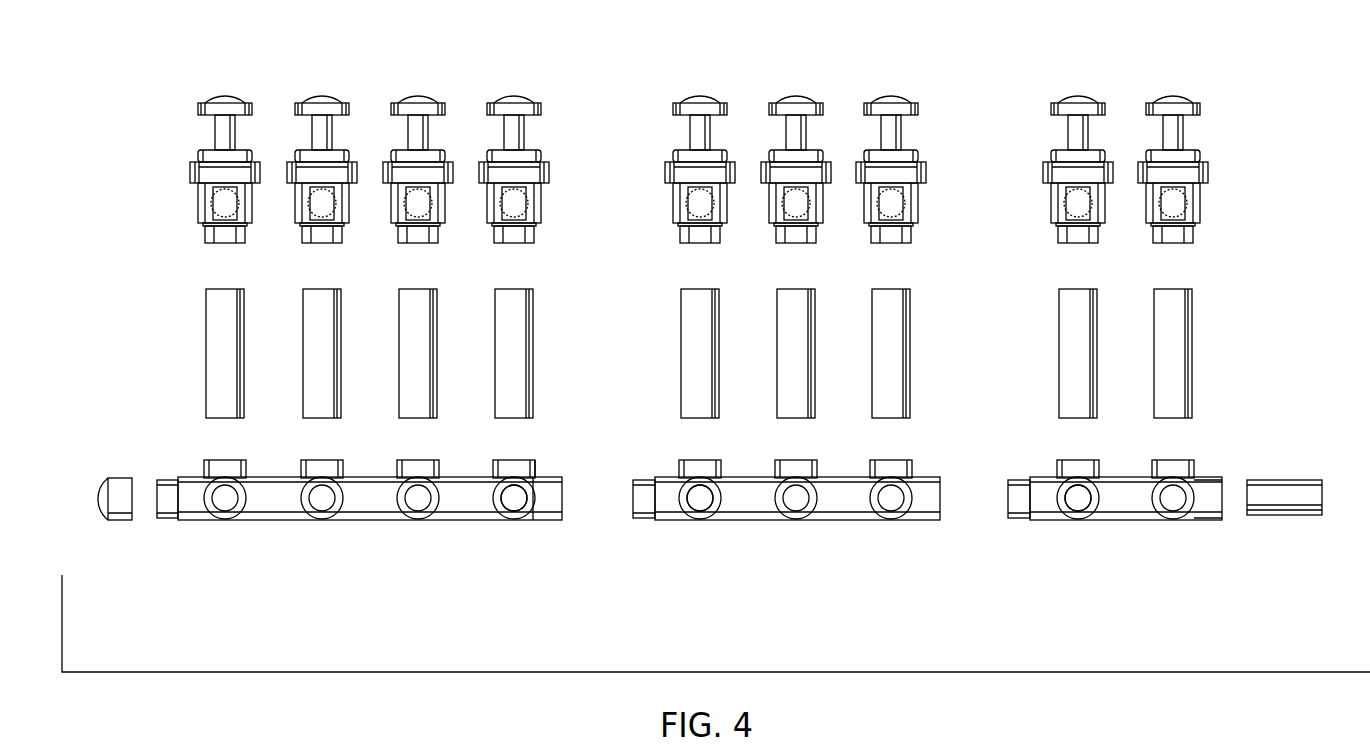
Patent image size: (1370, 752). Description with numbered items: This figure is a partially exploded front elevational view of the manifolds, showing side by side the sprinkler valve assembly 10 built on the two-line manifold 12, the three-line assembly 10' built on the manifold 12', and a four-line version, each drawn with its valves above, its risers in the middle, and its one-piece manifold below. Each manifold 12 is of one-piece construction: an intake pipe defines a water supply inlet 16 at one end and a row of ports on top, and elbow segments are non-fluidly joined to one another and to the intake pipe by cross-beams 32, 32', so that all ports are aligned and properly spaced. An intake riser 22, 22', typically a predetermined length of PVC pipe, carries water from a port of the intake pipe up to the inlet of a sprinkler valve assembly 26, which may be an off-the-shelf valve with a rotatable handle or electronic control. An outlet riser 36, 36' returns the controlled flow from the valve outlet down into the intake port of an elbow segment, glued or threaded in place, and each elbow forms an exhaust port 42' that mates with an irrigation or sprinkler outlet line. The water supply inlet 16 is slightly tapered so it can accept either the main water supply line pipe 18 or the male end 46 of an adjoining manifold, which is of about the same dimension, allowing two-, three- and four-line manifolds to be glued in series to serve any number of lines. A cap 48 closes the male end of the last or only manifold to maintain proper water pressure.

The sprinkler valve assembly 10 is at (1006, 327).
The sprinkler valve assembly 10' is at (949, 329).
The manifold 12 is at (978, 513).
The manifold 12' is at (786, 530).
The water supply inlet 16 is at (1170, 465).
The main water supply line pipe 18 is at (1257, 505).
The intake riser 22 is at (1212, 353).
The intake riser 22' is at (934, 353).
The sprinkler valve assembly 26 is at (1060, 169).
The cross-beam 32 is at (1111, 474).
The cross-beam 32' is at (879, 474).
The outlet riser 36 is at (1173, 353).
The outlet riser 36' is at (891, 353).
The exhaust port 42' is at (905, 531).
The male end 46 is at (1022, 513).
The cap 48 is at (123, 478).